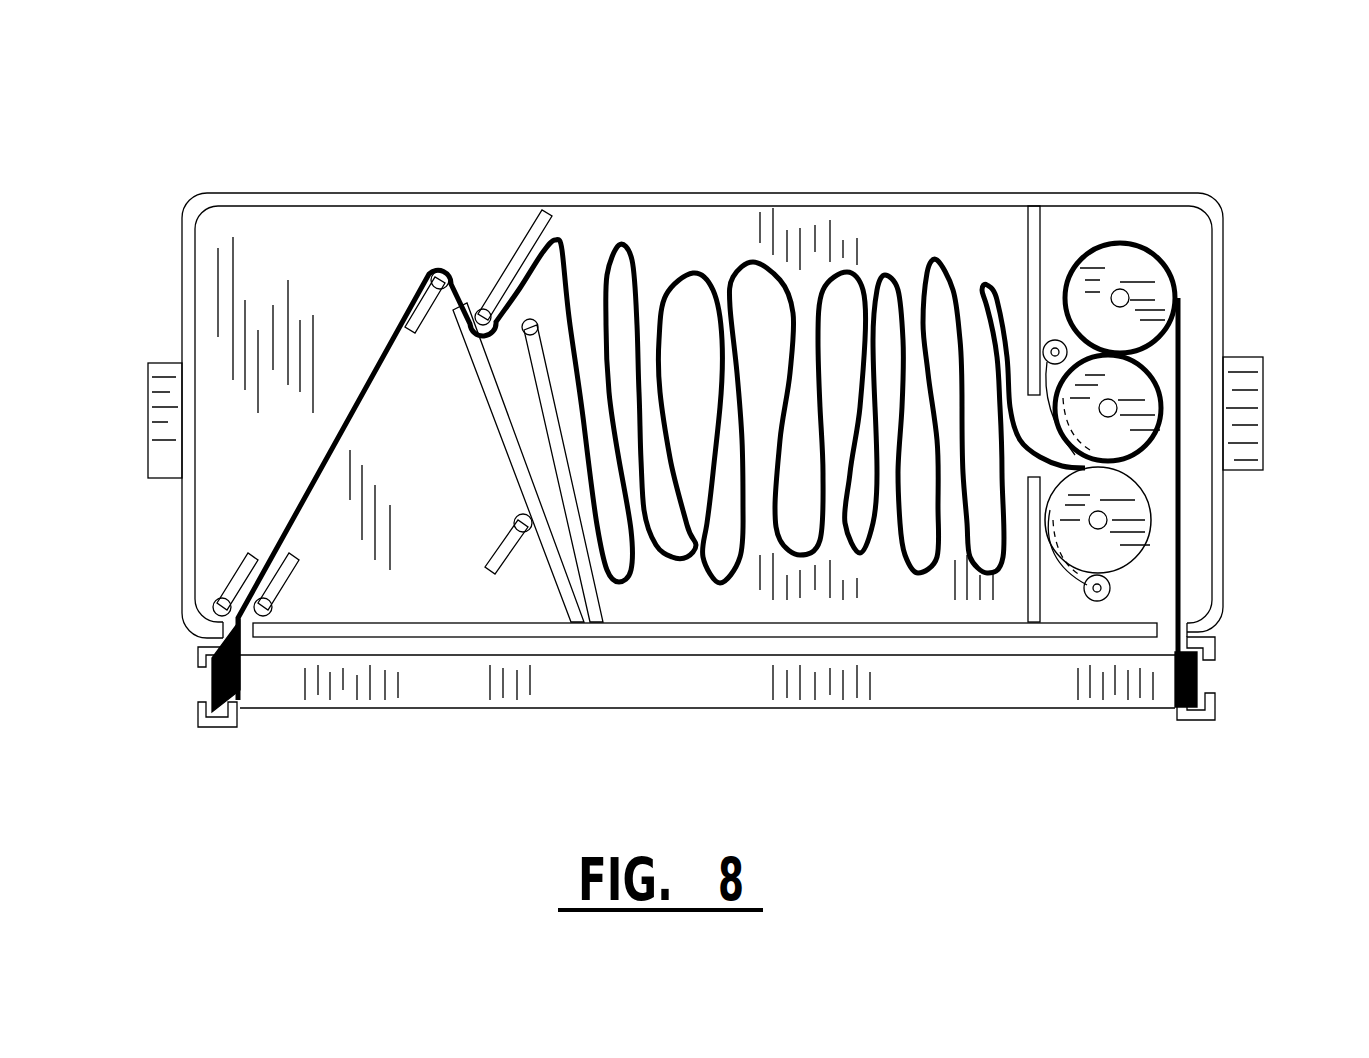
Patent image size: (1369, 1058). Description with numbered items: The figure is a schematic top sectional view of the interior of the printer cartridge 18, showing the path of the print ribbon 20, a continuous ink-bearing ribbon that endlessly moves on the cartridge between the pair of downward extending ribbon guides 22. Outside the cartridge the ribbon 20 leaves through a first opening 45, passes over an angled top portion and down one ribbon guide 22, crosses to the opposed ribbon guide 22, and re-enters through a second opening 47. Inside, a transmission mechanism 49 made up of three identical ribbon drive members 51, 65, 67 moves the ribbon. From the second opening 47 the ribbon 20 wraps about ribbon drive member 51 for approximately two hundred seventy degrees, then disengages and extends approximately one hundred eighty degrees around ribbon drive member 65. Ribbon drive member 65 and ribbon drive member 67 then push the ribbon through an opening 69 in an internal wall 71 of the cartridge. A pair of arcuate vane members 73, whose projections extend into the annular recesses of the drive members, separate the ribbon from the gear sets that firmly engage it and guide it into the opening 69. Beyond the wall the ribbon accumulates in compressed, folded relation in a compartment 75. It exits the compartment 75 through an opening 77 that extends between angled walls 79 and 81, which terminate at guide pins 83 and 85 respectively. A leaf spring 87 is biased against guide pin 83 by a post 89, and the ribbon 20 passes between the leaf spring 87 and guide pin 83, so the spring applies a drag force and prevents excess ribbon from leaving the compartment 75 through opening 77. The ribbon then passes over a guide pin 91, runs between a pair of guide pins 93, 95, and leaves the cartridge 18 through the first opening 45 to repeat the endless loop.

The printer cartridge 18 is at (1276, 287).
The print ribbon 20 is at (730, 683).
The ribbon guides 22 is at (200, 708).
The first opening 45 is at (252, 648).
The second opening 47 is at (1164, 652).
The transmission mechanism 49 is at (1180, 232).
The ribbon drive member 51 is at (1100, 273).
The ribbon drive member 65 is at (1143, 397).
The ribbon drive member 67 is at (1128, 522).
The opening 69 is at (1028, 463).
The internal wall 71 is at (1027, 270).
The arcuate vane members 73 is at (1063, 573).
The compartment 75 is at (693, 253).
The opening 77 is at (509, 361).
The angled wall 79 is at (505, 268).
The angled wall 81 is at (593, 596).
The guide pin 83 is at (478, 308).
The guide pin 85 is at (537, 318).
The leaf spring 87 is at (510, 466).
The post 89 is at (512, 515).
The guide pin 91 is at (430, 270).
The guide pin 93 is at (213, 598).
The guide pin 95 is at (272, 603).